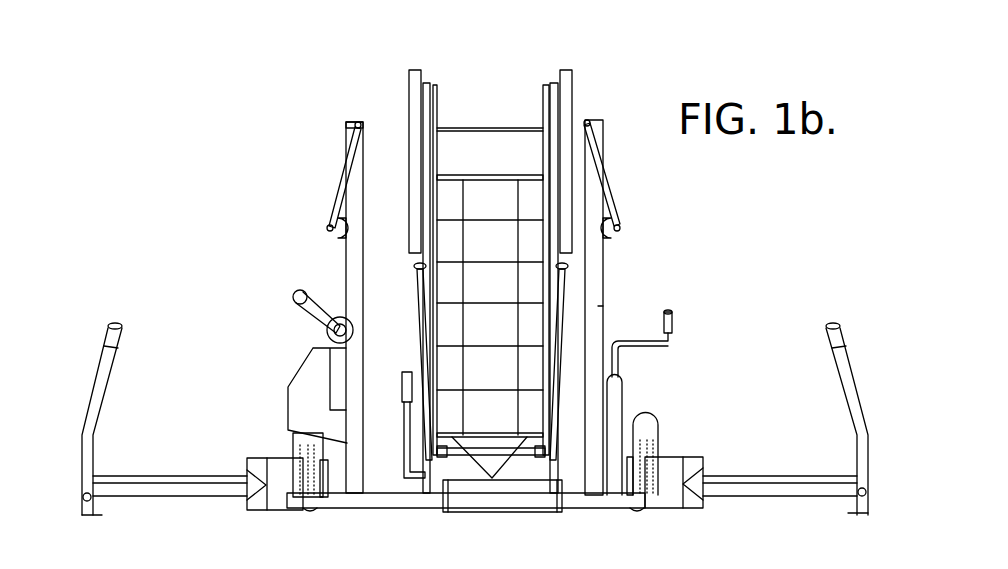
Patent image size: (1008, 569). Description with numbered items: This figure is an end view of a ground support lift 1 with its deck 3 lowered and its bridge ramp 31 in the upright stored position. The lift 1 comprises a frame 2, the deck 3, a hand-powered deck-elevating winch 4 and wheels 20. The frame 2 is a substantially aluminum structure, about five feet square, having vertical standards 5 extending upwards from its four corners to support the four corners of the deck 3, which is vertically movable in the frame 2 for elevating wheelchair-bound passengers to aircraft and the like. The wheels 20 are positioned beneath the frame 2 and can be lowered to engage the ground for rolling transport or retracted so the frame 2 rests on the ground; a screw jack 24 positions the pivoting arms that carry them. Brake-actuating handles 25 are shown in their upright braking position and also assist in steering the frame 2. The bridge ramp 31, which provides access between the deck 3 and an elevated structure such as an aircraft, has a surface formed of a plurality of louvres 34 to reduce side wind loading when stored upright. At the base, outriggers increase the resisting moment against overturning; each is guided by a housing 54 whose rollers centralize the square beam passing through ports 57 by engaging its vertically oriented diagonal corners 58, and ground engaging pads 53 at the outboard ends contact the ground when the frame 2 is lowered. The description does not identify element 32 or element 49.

The ground support lift 1 is at (262, 192).
The frame 2 is at (600, 265).
The deck 3 is at (378, 495).
The deck-elevating winch 4 is at (290, 387).
The vertical standards 5 is at (598, 306).
The wheels 20 is at (293, 447).
The screw jack 24 is at (623, 392).
The brake-actuating handles 25 is at (341, 190).
The bridge ramp 31 is at (572, 55).
The cross member 32 is at (508, 508).
The louvres 34 is at (494, 258).
The handle 49 is at (98, 385).
The ground engaging pads 53 is at (83, 512).
The housing 54 is at (278, 502).
The ports 57 is at (700, 462).
The diagonal corners 58 is at (793, 468).